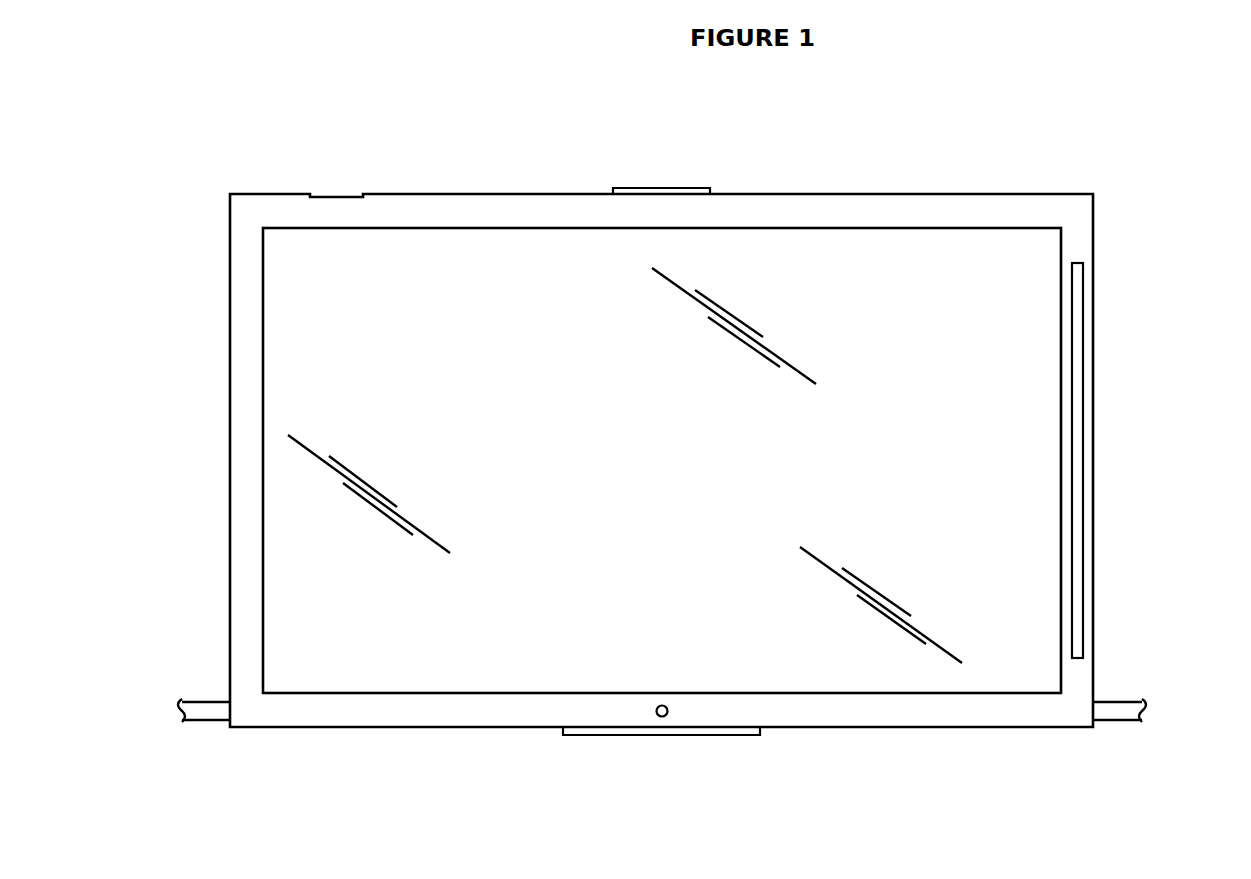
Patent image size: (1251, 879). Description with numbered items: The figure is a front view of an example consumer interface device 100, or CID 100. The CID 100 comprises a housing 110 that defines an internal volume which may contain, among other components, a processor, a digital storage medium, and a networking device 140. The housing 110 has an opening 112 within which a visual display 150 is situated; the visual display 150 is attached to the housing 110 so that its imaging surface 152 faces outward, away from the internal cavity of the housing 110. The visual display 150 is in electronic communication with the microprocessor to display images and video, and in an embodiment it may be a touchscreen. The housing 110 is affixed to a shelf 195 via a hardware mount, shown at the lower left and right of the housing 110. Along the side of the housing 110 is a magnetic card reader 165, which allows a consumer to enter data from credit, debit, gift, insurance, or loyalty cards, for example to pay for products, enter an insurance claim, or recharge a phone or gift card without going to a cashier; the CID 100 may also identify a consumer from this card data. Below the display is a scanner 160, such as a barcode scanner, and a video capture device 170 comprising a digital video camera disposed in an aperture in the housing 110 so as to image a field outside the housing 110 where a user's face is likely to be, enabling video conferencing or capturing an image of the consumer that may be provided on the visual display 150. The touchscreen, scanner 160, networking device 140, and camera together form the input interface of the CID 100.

The consumer interface device 100 is at (1066, 137).
The housing 110 is at (1072, 243).
The opening 112 is at (399, 228).
The networking device 140 is at (676, 195).
The visual display 150 is at (312, 544).
The imaging surface 152 is at (677, 491).
The barcode scanner 160 is at (687, 735).
The magnetic card reader 165 is at (1075, 501).
The video capture device 170 is at (655, 713).
The shelf 195 is at (1107, 708).